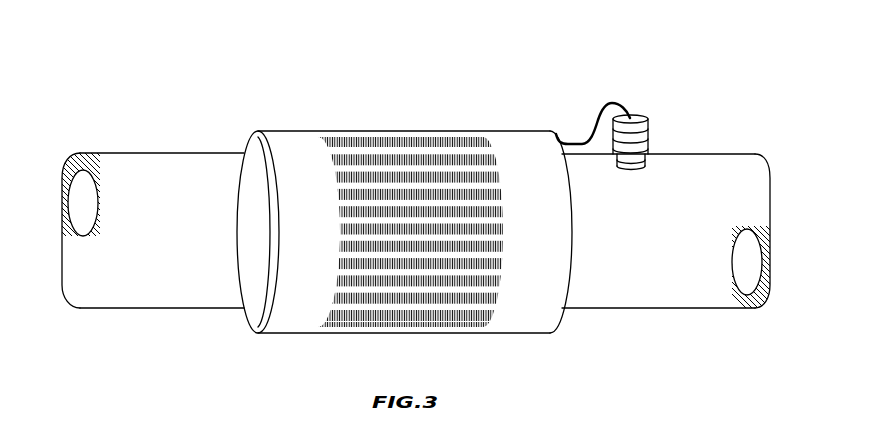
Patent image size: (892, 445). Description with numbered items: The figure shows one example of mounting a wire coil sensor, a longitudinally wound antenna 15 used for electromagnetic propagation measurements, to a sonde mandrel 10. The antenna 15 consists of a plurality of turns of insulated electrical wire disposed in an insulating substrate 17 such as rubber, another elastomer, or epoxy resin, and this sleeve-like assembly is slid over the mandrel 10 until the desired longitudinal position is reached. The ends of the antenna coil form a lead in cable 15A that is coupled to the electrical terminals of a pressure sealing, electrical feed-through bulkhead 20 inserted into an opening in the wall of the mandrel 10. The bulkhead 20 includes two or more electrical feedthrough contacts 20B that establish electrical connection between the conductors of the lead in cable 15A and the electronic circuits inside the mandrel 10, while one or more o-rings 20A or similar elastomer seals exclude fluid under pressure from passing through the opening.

The mandrel 10 is at (121, 309).
The antenna 15 is at (267, 128).
The lead in cable 15A is at (604, 104).
The insulating substrate 17 is at (515, 333).
The electrical feed-through bulkhead 20 is at (649, 130).
The o-rings 20A is at (648, 131).
The electrical feedthrough contacts 20B is at (624, 157).